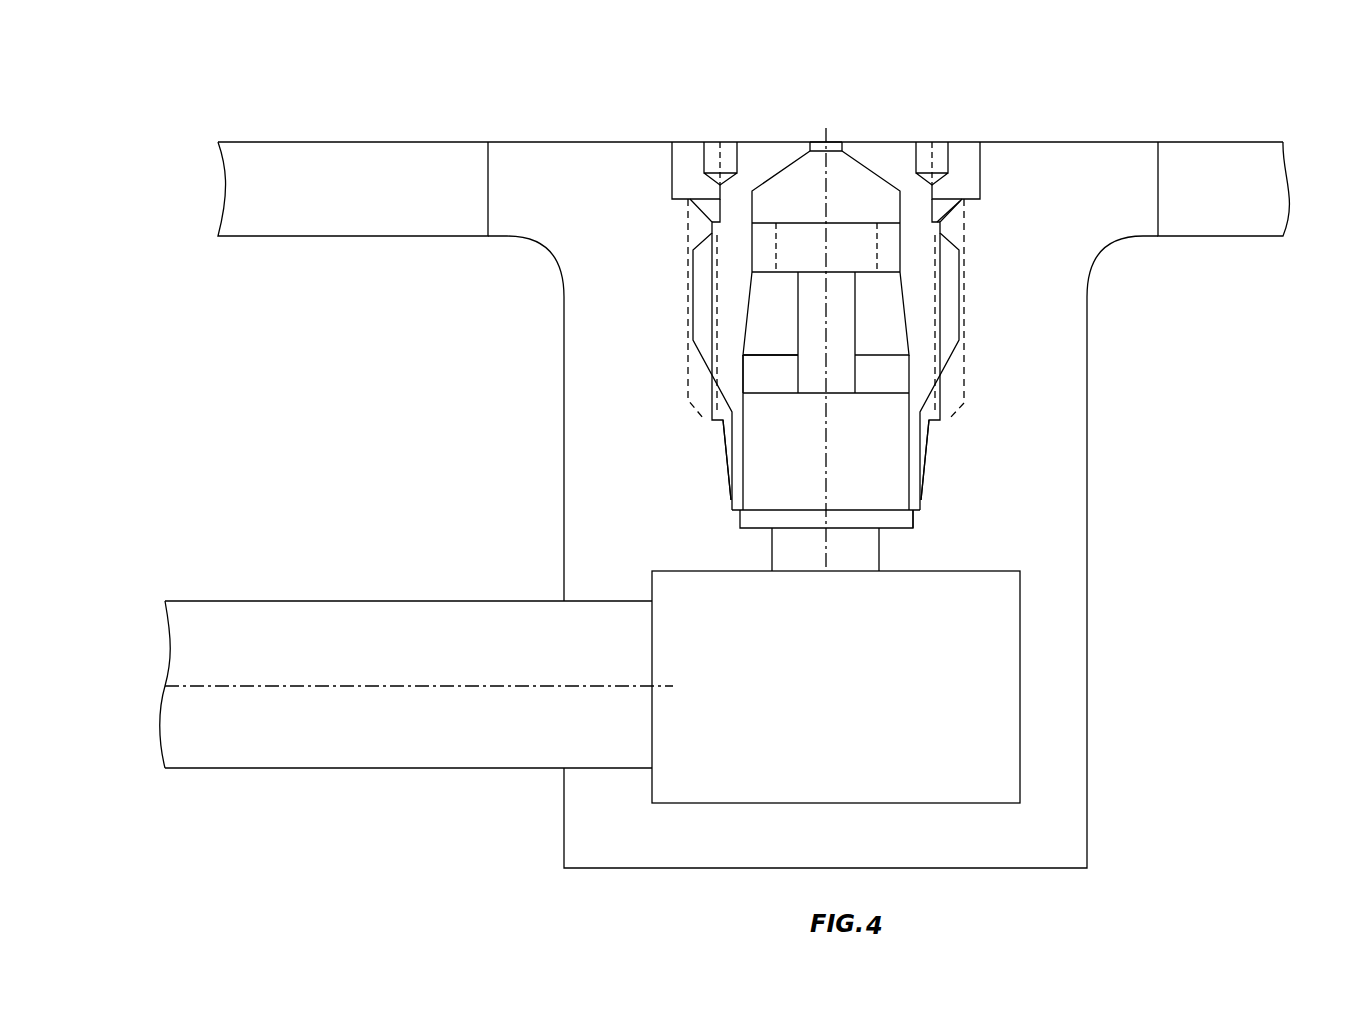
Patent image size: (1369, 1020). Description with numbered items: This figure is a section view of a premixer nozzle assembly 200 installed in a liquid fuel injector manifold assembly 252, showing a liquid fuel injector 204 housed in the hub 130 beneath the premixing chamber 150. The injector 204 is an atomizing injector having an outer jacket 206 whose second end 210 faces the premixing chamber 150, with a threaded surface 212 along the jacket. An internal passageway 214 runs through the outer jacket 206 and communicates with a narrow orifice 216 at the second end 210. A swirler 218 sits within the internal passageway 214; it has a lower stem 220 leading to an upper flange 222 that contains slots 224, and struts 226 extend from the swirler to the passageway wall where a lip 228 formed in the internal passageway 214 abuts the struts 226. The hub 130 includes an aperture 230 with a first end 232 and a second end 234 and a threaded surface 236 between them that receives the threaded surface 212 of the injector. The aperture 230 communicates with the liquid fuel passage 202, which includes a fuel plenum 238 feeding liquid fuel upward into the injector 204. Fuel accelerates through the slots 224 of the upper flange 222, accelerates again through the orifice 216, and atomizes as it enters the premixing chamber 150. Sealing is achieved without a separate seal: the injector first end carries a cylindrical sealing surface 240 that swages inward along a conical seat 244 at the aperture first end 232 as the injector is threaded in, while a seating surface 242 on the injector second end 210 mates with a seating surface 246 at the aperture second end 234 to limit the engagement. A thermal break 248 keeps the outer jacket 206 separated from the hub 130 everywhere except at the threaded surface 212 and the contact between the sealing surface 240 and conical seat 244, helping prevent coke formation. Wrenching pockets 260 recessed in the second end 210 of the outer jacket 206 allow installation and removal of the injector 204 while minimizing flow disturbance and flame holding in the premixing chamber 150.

The hub 130 is at (1118, 142).
The premixing chamber 150 is at (748, 51).
The fuel injector assembly 200 is at (1085, 72).
The liquid fuel passage 202 is at (443, 662).
The liquid fuel injector 204 is at (870, 112).
The outer jacket 206 is at (882, 160).
The second end 210 is at (672, 145).
The threaded surface 212 is at (945, 283).
The internal passageway 214 is at (798, 473).
The orifice 216 is at (815, 143).
The swirler 218 is at (800, 305).
The lower stem 220 is at (842, 337).
The upper flange 222 is at (780, 258).
The slots 224 is at (885, 262).
The struts 226 is at (755, 383).
The lip 228 is at (757, 358).
The aperture 230 is at (760, 523).
The first end 232 is at (921, 518).
The second end 234 is at (967, 137).
The threaded surface 236 is at (950, 321).
The fuel plenum 238 is at (851, 693).
The cylindrical sealing surface 240 is at (725, 442).
The seating surface 242 is at (715, 205).
The conical seat 244 is at (727, 482).
The seating surface 246 is at (680, 206).
The thermal break 248 is at (945, 214).
The liquid fuel injector manifold assembly 252 is at (375, 155).
The wrenching pocket 260 is at (731, 143).